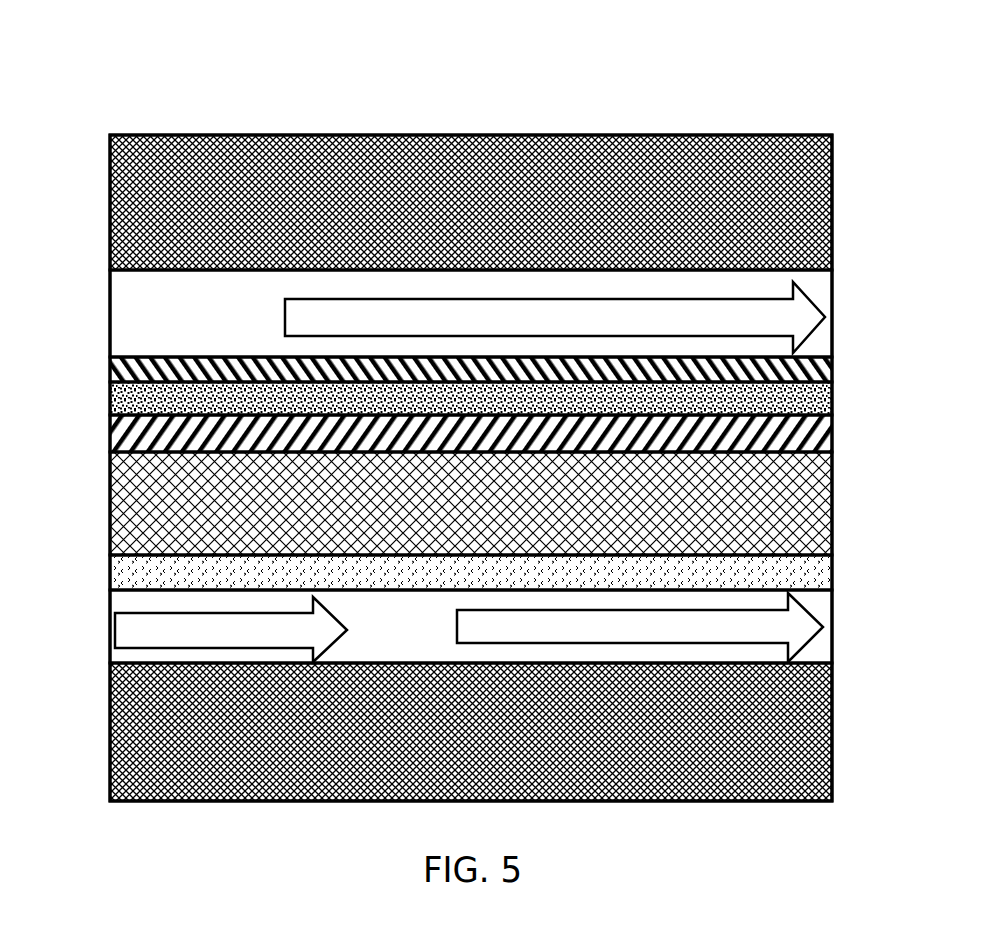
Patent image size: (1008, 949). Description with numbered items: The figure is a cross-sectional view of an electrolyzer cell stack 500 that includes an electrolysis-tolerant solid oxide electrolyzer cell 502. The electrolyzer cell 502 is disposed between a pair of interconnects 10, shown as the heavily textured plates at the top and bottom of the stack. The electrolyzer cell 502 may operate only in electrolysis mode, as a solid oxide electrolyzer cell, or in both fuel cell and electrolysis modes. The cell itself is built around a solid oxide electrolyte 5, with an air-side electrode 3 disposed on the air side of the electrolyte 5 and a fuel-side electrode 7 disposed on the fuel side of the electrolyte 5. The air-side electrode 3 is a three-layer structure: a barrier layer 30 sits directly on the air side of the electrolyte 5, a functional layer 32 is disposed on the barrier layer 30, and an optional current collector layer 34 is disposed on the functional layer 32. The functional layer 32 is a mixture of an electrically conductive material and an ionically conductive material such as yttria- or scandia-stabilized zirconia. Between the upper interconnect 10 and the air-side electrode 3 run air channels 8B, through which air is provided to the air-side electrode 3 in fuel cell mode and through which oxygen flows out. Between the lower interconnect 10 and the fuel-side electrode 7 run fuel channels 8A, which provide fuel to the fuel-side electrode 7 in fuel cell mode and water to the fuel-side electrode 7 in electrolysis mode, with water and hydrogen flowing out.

The electrolyzer cell stack 500 is at (251, 67).
The interconnects 10 is at (513, 208).
The air channels 8B is at (190, 322).
The fuel channels 8A is at (432, 634).
The air-side electrode 3 is at (43, 345).
The current collector layer 34 is at (110, 373).
The functional layer 32 is at (110, 402).
The barrier layer 30 is at (110, 435).
The solid oxide electrolyte 5 is at (508, 516).
The fuel-side electrode 7 is at (110, 570).
The electrolyzer cell 502 is at (845, 359).